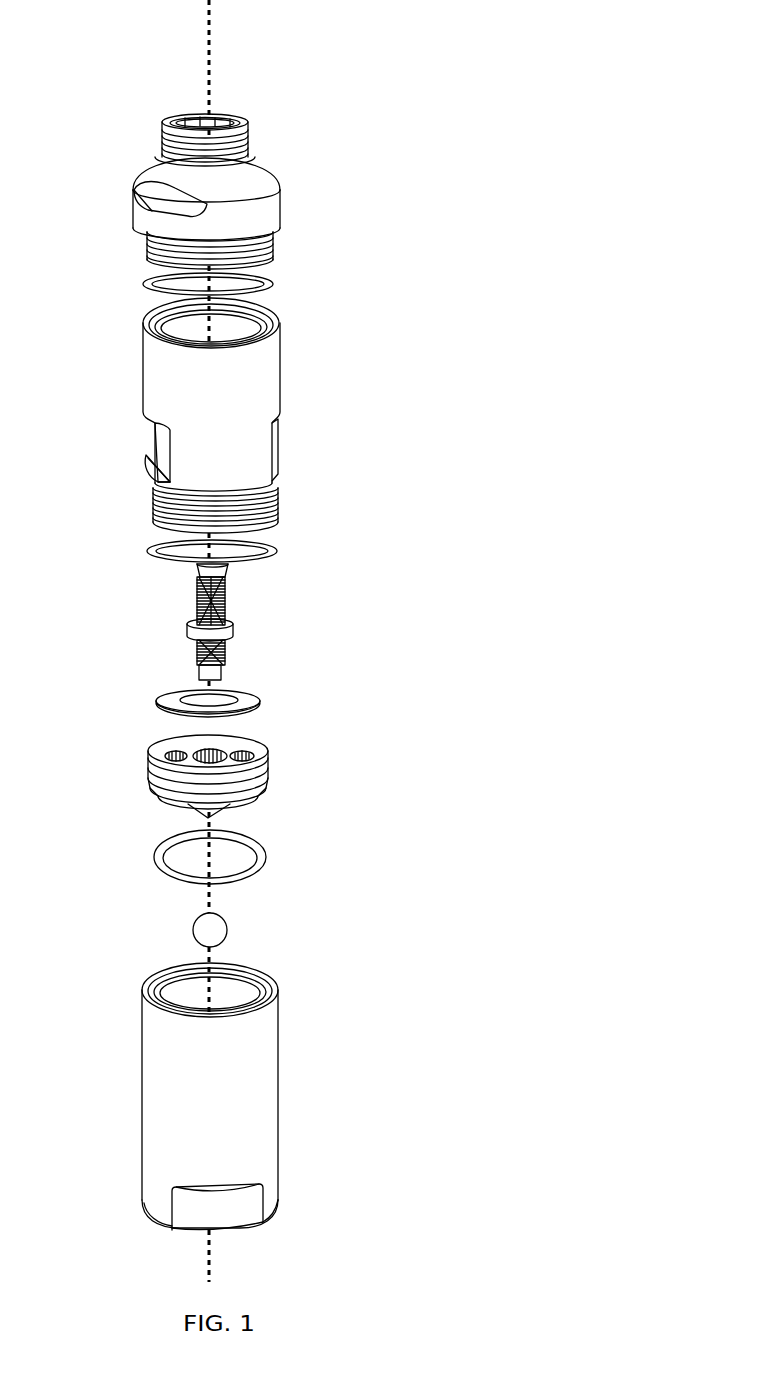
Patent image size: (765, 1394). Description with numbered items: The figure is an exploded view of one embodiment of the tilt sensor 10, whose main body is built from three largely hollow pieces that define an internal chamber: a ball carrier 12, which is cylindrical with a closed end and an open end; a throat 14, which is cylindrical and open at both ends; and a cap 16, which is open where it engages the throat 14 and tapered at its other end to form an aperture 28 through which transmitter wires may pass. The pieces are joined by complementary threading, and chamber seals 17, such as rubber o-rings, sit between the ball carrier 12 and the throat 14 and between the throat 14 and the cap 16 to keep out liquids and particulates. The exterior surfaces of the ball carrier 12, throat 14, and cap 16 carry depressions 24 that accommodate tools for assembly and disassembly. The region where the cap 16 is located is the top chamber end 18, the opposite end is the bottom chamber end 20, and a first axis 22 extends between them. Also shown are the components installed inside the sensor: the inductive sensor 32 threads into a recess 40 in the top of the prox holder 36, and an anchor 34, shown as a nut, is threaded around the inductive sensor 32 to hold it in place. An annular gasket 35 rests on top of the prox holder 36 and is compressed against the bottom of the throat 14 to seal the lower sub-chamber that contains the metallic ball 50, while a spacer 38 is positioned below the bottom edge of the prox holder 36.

The tilt sensor 10 is at (442, 489).
The ball carrier 12 is at (216, 1108).
The throat 14 is at (217, 408).
The cap 16 is at (265, 212).
The chamber seals 17 is at (150, 286).
The top chamber end 18 is at (298, 145).
The bottom chamber end 20 is at (287, 1235).
The first axis 22 is at (211, 19).
The depressions 24 is at (153, 203).
The aperture 28 is at (185, 120).
The inductive sensor 32 is at (226, 605).
The anchor 34 is at (219, 636).
The gasket 35 is at (244, 703).
The prox holder 36 is at (244, 795).
The spacer 38 is at (266, 860).
The recess 40 is at (198, 752).
The metallic ball 50 is at (214, 937).